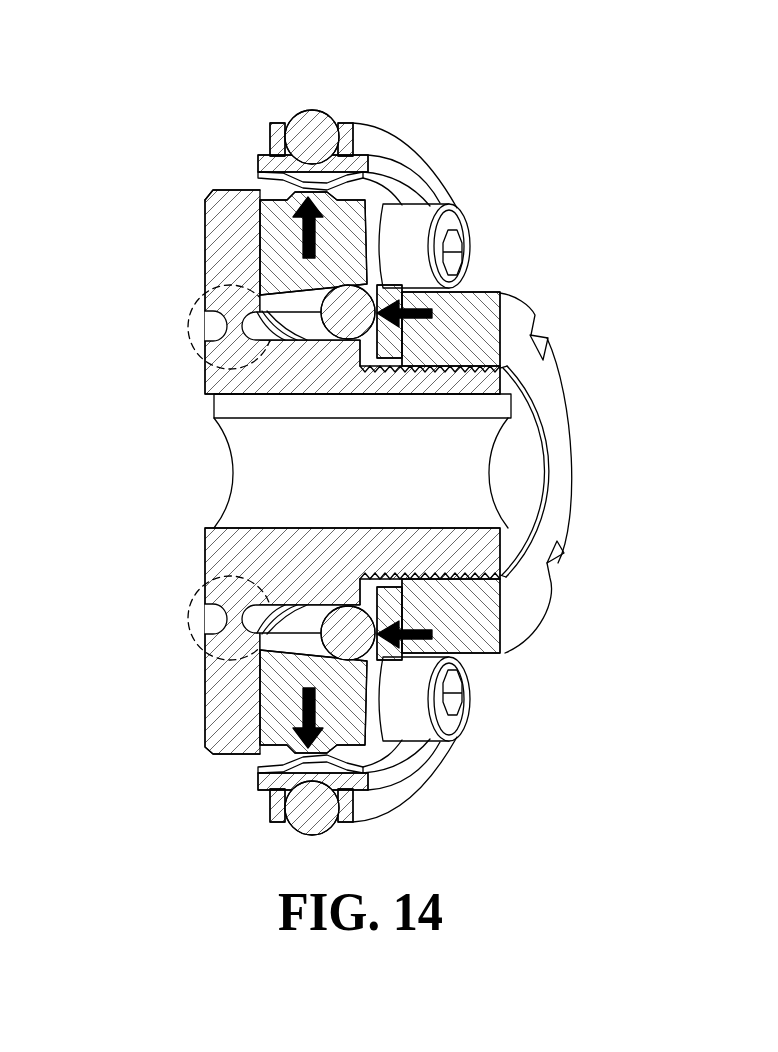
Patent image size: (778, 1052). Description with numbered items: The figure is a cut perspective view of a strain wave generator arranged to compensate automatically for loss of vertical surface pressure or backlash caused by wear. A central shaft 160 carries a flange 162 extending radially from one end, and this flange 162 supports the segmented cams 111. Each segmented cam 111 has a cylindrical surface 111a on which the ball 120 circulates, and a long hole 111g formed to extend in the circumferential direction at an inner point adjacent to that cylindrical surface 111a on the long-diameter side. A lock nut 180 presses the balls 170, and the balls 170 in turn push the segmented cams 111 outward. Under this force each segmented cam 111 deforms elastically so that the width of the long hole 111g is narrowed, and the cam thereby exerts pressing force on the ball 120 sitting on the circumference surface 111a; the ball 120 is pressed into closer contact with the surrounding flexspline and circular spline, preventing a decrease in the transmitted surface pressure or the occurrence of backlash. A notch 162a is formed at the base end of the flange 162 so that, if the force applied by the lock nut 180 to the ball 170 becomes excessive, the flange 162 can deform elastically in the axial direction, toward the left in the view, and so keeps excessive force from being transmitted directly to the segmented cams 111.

The segmented cam 111 is at (385, 217).
The cylindrical surface 111a is at (267, 155).
The long hole 111g is at (383, 210).
The ball 120 is at (317, 124).
The central shaft 160 is at (480, 560).
The flange 162 is at (226, 250).
The notch 162a is at (222, 337).
The ball 170 is at (345, 322).
The lock nut 180 is at (483, 332).